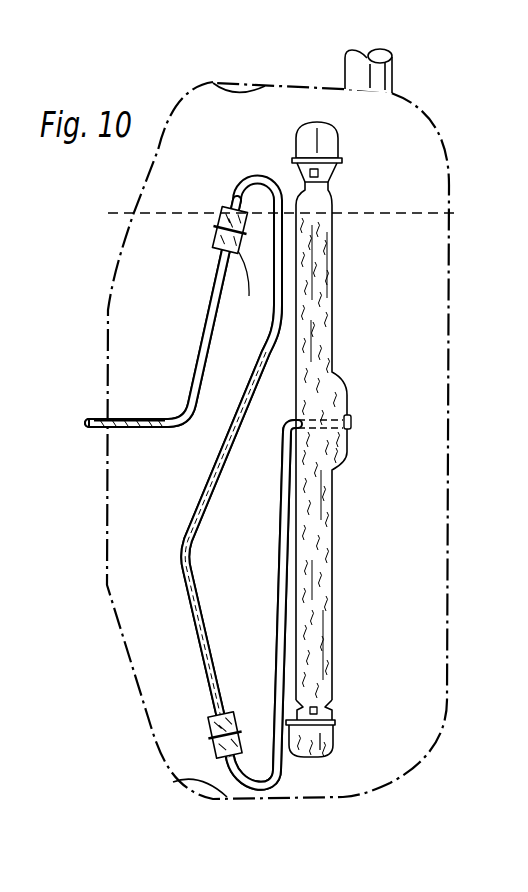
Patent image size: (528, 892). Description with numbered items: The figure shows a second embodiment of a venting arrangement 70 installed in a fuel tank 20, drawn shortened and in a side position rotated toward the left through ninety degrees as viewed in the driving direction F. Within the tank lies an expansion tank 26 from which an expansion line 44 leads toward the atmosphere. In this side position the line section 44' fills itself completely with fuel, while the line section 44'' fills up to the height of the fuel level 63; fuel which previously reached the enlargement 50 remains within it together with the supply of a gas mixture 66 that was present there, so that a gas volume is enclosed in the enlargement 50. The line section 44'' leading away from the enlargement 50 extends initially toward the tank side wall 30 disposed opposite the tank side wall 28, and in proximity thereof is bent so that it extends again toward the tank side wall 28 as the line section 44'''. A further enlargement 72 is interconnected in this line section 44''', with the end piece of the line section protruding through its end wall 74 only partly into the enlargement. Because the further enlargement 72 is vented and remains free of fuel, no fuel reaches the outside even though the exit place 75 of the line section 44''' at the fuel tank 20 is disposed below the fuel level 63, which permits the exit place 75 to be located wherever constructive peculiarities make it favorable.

The fuel tank 20 is at (352, 789).
The expansion tank 26 is at (345, 573).
The tank side wall 28 is at (173, 782).
The tank side wall 30 is at (212, 82).
The expansion line 44 is at (184, 482).
The line section 44' is at (283, 603).
The line section 44'' is at (212, 478).
The line section 44''' is at (163, 313).
The enlargement 50 is at (196, 724).
The fuel level 63 is at (465, 204).
The gas mixture 66 is at (250, 286).
The venting arrangement 70 is at (346, 350).
The further enlargement 72 is at (195, 231).
The end wall 74 is at (227, 209).
The exit place 75 is at (100, 416).
The driving direction F is at (102, 313).